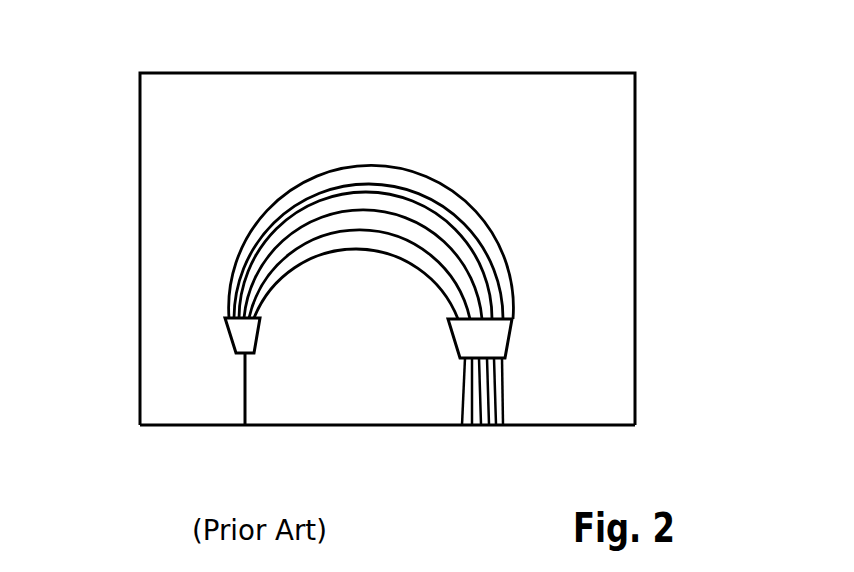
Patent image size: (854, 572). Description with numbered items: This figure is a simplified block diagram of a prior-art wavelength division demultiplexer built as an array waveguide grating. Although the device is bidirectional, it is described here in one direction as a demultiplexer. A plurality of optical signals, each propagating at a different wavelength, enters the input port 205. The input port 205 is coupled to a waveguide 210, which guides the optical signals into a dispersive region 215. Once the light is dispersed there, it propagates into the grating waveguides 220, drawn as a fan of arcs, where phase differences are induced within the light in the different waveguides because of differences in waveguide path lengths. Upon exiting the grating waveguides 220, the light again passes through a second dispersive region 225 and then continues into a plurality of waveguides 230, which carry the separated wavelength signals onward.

The input port 205 is at (240, 425).
The waveguide 210 is at (243, 384).
The dispersive region 215 is at (243, 331).
The grating waveguides 220 is at (390, 202).
The dispersive region 225 is at (490, 337).
The plurality of waveguides 230 is at (490, 397).